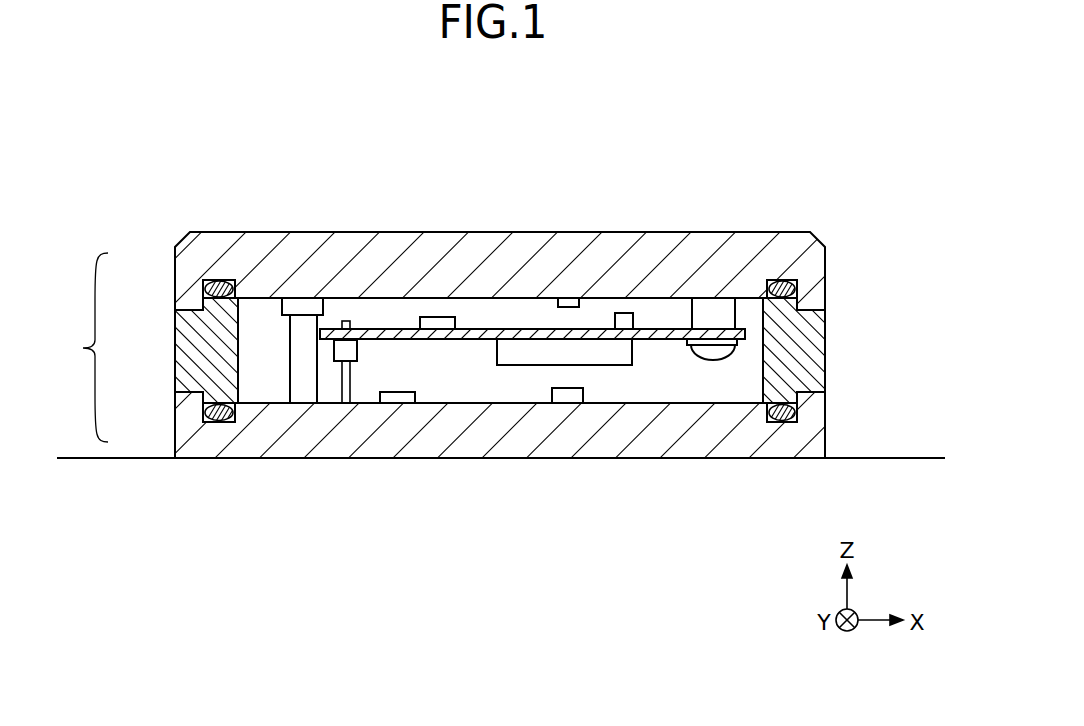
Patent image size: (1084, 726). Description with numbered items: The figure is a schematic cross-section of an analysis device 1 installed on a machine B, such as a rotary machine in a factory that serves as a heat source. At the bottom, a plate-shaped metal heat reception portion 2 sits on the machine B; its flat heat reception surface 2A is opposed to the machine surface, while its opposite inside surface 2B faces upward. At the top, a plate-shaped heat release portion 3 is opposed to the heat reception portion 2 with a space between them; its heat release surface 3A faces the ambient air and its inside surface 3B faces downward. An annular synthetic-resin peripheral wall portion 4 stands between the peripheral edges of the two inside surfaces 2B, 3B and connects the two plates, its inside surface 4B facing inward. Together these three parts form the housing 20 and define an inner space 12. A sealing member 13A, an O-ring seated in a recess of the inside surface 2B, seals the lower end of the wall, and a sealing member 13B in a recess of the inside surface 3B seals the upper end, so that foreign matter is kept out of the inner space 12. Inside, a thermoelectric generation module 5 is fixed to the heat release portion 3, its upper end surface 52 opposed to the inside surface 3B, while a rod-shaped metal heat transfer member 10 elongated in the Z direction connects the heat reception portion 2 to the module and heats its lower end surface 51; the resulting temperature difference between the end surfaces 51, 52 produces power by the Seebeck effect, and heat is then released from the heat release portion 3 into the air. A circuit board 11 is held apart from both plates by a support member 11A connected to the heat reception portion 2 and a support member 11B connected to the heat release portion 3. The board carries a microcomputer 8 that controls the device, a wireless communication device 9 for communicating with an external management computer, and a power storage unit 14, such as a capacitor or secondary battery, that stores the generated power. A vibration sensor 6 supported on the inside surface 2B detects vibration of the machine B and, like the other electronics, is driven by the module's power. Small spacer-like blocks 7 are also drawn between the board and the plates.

The analysis device 1 is at (818, 158).
The heat reception portion 2 is at (187, 425).
The heat reception surface 2A is at (618, 458).
The inside surface 2B is at (614, 403).
The heat release portion 3 is at (187, 268).
The heat release surface 3A is at (492, 232).
The inside surface 3B is at (510, 300).
The peripheral wall portion 4 is at (187, 348).
The inside surface 4B is at (765, 347).
The thermoelectric generation module 5 is at (323, 285).
The vibration sensor 6 is at (568, 397).
The spacer 7 is at (568, 300).
The microcomputer 8 is at (620, 352).
The wireless communication device 9 is at (623, 318).
The heat transfer member 10 is at (297, 393).
The circuit board 11 is at (658, 328).
The support member 11A is at (348, 378).
The support member 11B is at (720, 308).
The inner space 12 is at (507, 396).
The sealing member 13A is at (797, 410).
The sealing member 13B is at (797, 287).
The power storage unit 14 is at (442, 315).
The housing 20 is at (78, 347).
The end surface 51 is at (303, 315).
The end surface 52 is at (315, 298).
The machine B is at (906, 456).